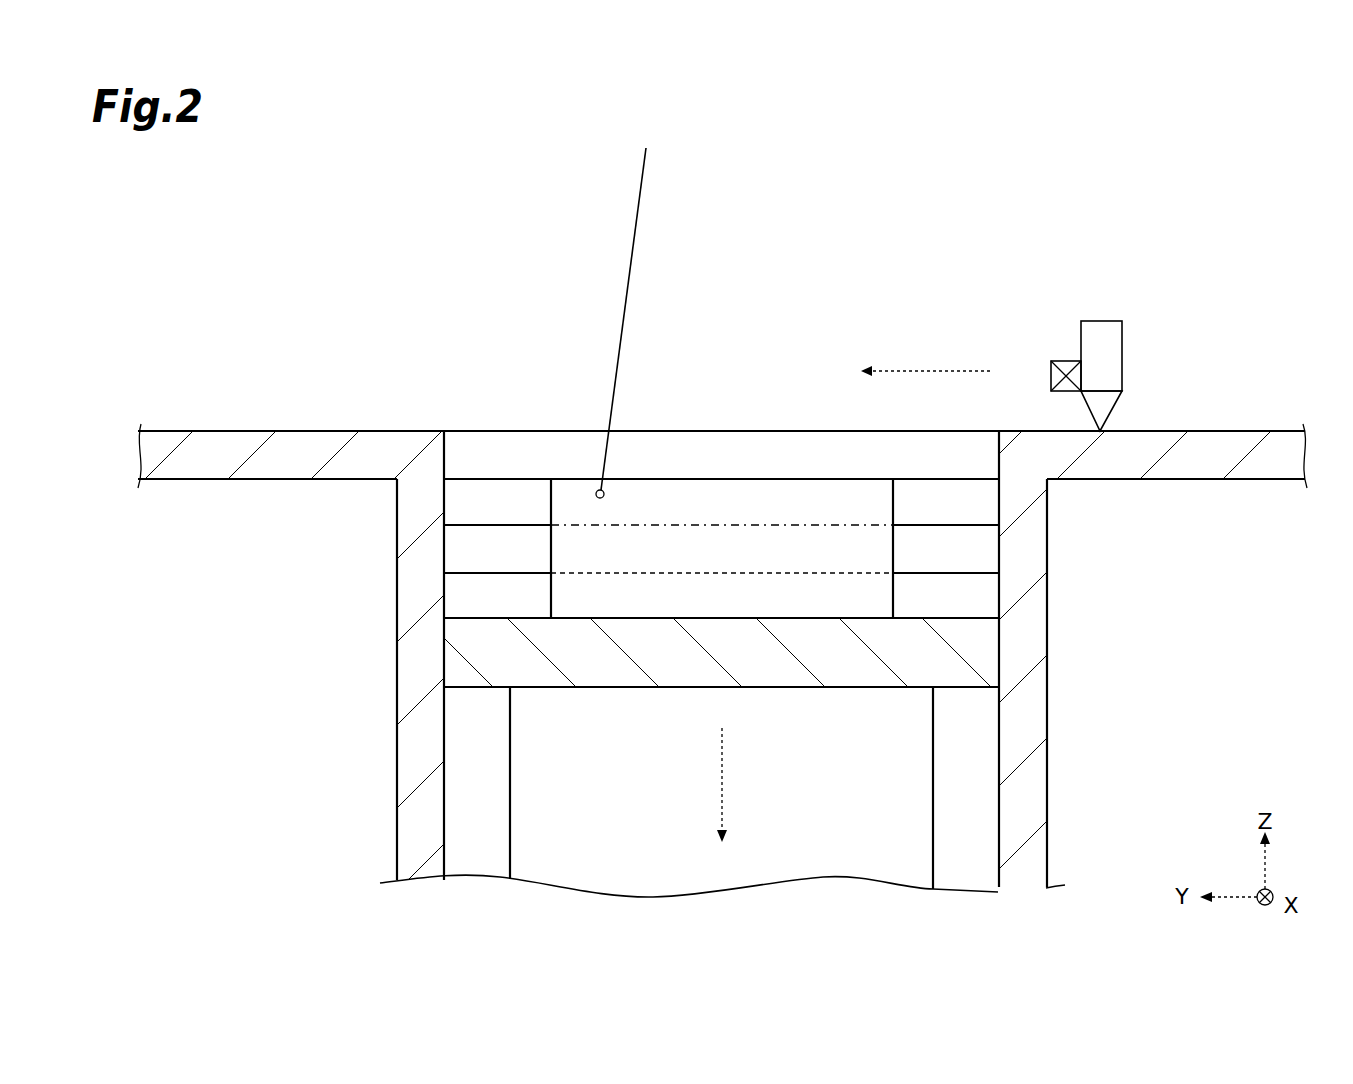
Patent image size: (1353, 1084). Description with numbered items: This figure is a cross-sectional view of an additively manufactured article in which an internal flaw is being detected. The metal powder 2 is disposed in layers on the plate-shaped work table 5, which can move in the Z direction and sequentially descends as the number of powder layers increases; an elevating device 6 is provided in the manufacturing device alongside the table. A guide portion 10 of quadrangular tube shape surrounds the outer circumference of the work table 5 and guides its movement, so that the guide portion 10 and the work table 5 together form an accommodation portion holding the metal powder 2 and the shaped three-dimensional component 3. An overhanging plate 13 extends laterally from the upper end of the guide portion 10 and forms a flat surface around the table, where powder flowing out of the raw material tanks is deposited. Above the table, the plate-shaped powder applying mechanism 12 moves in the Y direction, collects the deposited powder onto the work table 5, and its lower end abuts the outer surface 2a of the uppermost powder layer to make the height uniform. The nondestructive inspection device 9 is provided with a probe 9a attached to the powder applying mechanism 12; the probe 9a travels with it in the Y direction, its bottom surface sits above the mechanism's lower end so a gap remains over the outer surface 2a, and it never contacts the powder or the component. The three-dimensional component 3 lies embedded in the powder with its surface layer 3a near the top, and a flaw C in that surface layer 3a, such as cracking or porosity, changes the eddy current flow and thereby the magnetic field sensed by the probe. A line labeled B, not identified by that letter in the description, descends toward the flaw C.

The metal powder 2 is at (465, 551).
The outer surface 2a is at (488, 424).
The three-dimensional component 3 is at (811, 497).
The surface layer 3a is at (714, 474).
The work table 5 is at (977, 647).
The elevating device 6 is at (910, 762).
The nondestructive inspection device 9 is at (1035, 344).
The probe 9a is at (1066, 361).
The guide portion 10 is at (1034, 557).
The powder applying mechanism 12 is at (1100, 330).
The overhanging plate 13 is at (196, 470).
The laser beam B is at (640, 187).
The flaw C is at (597, 490).